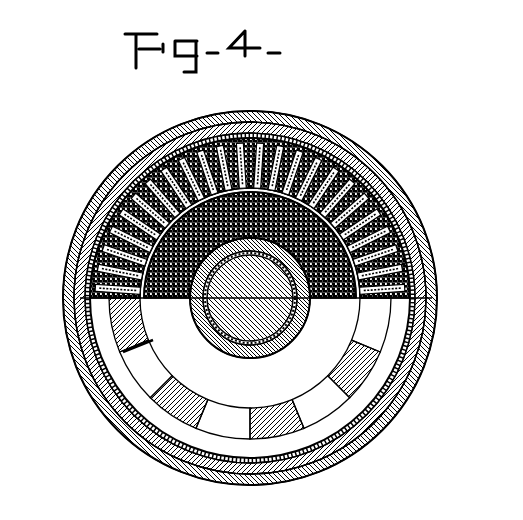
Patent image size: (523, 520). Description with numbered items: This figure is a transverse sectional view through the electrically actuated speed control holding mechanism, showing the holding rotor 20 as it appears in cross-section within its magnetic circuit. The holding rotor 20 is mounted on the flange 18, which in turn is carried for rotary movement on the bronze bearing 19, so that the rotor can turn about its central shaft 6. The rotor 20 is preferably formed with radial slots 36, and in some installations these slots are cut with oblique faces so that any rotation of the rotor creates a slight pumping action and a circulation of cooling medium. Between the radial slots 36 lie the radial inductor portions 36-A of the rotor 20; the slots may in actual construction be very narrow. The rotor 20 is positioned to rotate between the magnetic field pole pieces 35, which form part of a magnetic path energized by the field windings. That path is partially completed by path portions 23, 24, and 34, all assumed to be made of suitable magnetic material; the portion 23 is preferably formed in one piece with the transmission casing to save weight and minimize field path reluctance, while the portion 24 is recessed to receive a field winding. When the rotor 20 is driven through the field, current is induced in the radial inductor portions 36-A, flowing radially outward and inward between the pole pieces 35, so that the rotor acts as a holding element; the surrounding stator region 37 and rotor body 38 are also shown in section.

The shaft 6 is at (272, 305).
The flange 18 is at (300, 324).
The bronze bearing 19 is at (212, 326).
The holding rotor 20 is at (422, 274).
The magnetic path portion 23 is at (412, 213).
The magnetic path portion 24 is at (365, 397).
The magnetic path portion 34 is at (418, 250).
The magnetic field pole piece 35 is at (358, 367).
The radial slot 36 is at (360, 212).
The inductor portion 36-A is at (312, 172).
The stator core 37 is at (350, 185).
The rotor 38 is at (190, 222).